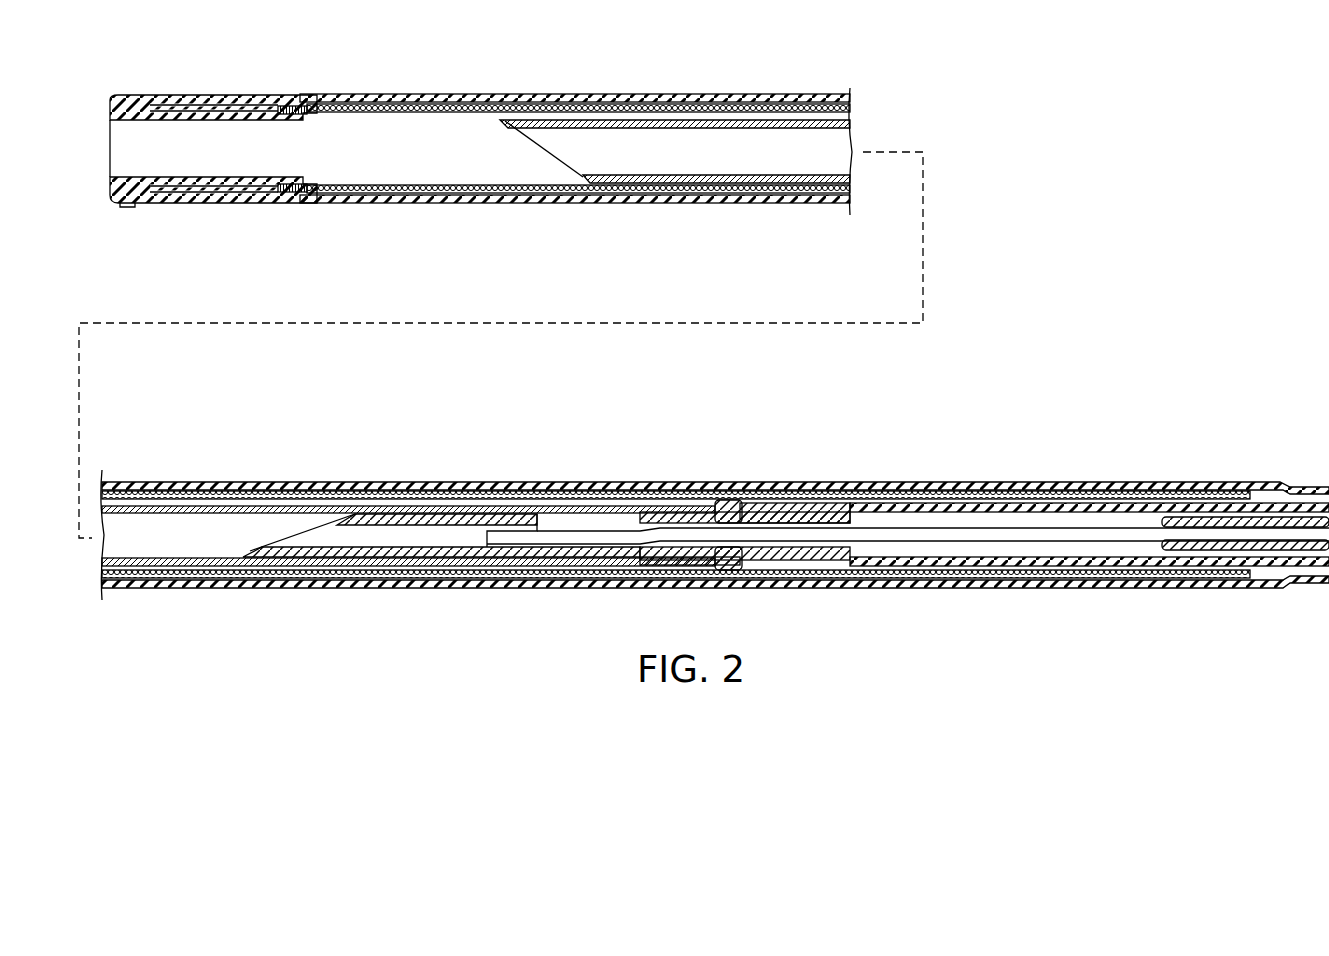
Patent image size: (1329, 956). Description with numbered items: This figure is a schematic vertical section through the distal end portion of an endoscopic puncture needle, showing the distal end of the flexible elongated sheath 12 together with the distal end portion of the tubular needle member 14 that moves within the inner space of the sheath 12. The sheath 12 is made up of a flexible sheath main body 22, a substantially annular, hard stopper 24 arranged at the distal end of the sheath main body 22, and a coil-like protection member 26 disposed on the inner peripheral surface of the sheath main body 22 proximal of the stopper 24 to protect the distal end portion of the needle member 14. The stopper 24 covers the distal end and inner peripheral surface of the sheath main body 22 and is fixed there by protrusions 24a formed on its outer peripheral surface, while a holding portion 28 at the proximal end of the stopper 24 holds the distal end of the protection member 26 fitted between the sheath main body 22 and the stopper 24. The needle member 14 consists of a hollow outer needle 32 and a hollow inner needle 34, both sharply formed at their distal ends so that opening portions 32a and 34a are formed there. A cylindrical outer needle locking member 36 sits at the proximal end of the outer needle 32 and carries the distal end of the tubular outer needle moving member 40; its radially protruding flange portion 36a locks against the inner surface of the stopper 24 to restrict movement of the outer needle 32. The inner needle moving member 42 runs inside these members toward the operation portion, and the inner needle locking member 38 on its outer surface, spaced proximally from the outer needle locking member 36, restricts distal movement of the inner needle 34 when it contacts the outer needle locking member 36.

The sheath 12 is at (418, 86).
The needle member 14 is at (729, 194).
The sheath main body 22 is at (690, 94).
The stopper 24 is at (180, 101).
The protrusions 24a is at (180, 205).
The protection member 26 is at (352, 185).
The holding portion 28 is at (292, 192).
The outer needle 32 is at (793, 178).
The opening portion 32a is at (504, 122).
The inner needle 34 is at (352, 560).
The opening portion 34a is at (250, 551).
The outer needle locking member 36 is at (668, 515).
The flange portion 36a is at (727, 502).
The inner needle locking member 38 is at (1205, 520).
The outer needle moving member 40 is at (915, 507).
The inner needle moving member 42 is at (1030, 535).